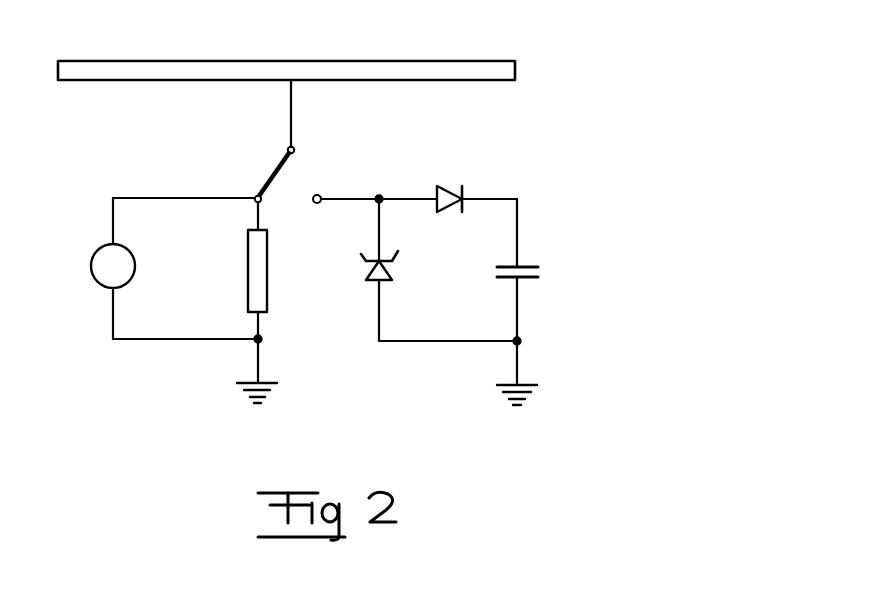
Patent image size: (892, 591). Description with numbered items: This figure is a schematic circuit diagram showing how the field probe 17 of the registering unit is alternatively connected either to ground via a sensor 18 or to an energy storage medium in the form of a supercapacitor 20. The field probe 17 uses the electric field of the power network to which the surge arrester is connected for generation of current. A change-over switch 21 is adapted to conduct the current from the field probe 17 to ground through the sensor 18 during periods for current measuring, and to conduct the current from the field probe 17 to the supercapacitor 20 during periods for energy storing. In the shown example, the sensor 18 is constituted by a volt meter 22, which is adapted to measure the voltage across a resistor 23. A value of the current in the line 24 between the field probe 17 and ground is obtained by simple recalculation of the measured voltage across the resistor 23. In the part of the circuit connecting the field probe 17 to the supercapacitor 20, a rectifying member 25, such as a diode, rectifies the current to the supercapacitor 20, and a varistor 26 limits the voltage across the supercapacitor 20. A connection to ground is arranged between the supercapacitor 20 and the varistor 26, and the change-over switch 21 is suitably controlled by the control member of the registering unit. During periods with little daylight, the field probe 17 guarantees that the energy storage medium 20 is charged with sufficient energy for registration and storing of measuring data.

The field probe 17 is at (446, 70).
The sensor 18 is at (208, 221).
The supercapacitor 20 is at (521, 265).
The change-over switch 21 is at (285, 167).
The volt meter 22 is at (120, 276).
The resistor 23 is at (267, 290).
The line 24 is at (263, 365).
The rectifying member 25 is at (448, 185).
The varistor 26 is at (386, 262).